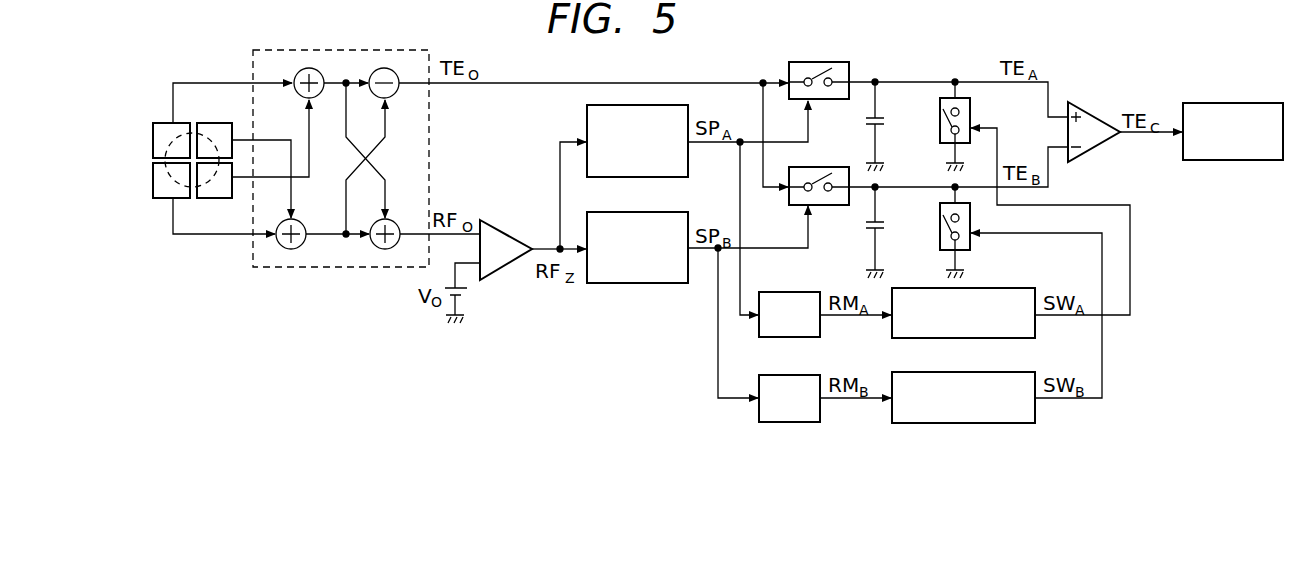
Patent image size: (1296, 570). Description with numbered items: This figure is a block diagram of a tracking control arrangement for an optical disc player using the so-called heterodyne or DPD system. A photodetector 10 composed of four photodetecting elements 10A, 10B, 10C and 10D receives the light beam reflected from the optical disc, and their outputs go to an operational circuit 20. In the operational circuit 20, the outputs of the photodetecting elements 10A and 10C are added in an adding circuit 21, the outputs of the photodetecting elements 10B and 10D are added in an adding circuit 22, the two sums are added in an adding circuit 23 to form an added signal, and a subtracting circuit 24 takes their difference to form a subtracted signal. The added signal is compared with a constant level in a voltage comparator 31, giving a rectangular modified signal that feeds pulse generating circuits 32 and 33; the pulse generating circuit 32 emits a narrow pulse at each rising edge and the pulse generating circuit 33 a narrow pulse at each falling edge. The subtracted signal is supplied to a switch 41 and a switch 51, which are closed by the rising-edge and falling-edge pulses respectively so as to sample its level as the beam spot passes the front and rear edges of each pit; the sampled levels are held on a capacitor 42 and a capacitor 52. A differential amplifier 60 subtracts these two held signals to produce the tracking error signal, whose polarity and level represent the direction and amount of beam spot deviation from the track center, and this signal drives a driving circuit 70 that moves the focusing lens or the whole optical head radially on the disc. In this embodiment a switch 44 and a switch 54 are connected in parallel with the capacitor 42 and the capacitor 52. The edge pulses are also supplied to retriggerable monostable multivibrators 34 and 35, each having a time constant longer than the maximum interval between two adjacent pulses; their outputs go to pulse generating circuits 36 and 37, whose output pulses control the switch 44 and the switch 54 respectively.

The photodetector 10 is at (182, 161).
The photodetecting element 10A is at (168, 126).
The photodetecting element 10B is at (162, 196).
The photodetecting element 10C is at (218, 198).
The photodetecting element 10D is at (222, 125).
The operational circuit 20 is at (358, 189).
The adding circuit 21 is at (300, 95).
The adding circuit 22 is at (301, 222).
The adding circuit 23 is at (398, 228).
The subtracting circuit 24 is at (398, 88).
The voltage comparator 31 is at (503, 265).
The pulse generating circuit 32 is at (665, 177).
The pulse generating circuit 33 is at (650, 283).
The monostable multivibrator 34 is at (782, 292).
The monostable multivibrator 35 is at (808, 375).
The pulse generating circuit 36 is at (982, 288).
The pulse generating circuit 37 is at (1015, 372).
The switch 41 is at (828, 100).
The capacitor 42 is at (882, 122).
The switch 44 is at (940, 128).
The switch 51 is at (828, 205).
The capacitor 52 is at (882, 226).
The switch 54 is at (940, 235).
The differential amplifier 60 is at (1103, 148).
The driving circuit 70 is at (1228, 160).